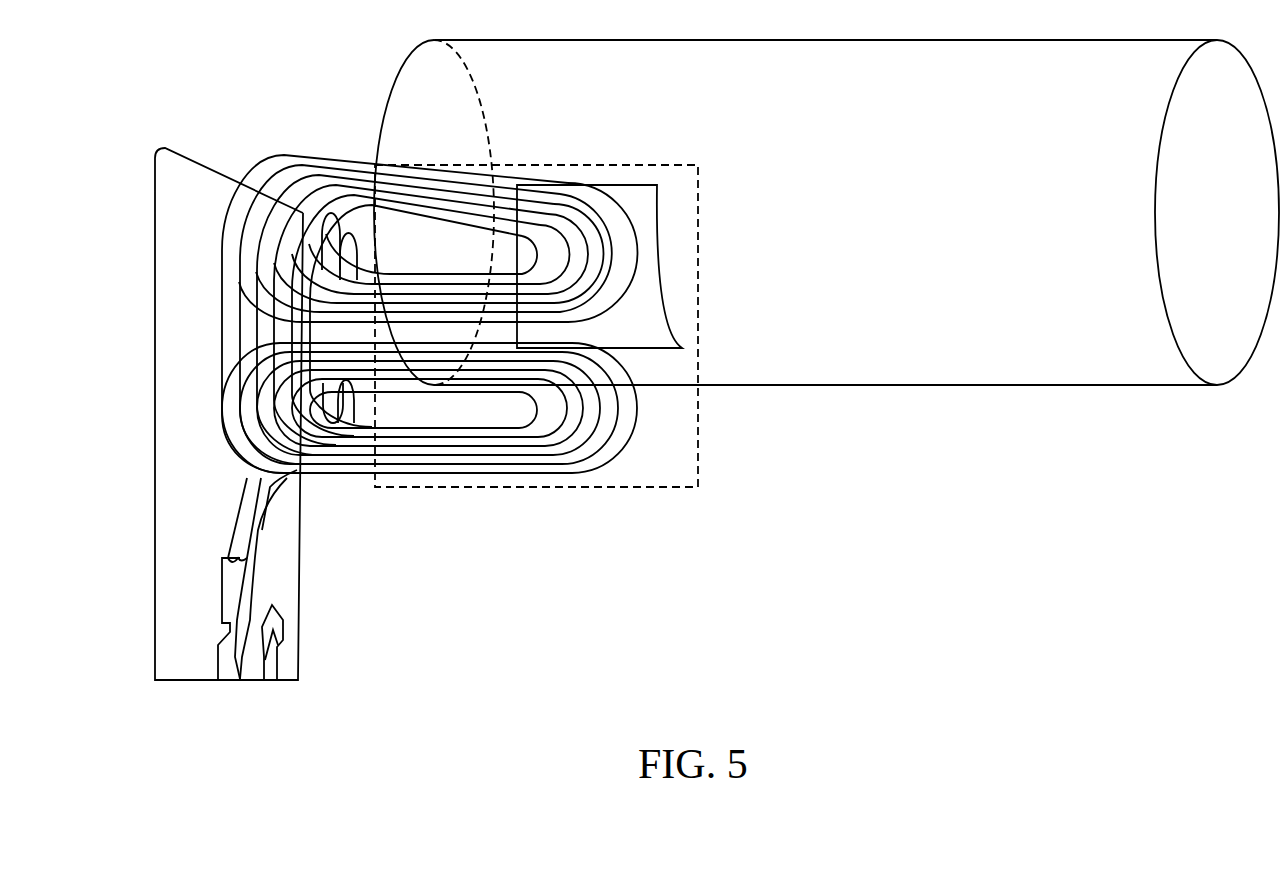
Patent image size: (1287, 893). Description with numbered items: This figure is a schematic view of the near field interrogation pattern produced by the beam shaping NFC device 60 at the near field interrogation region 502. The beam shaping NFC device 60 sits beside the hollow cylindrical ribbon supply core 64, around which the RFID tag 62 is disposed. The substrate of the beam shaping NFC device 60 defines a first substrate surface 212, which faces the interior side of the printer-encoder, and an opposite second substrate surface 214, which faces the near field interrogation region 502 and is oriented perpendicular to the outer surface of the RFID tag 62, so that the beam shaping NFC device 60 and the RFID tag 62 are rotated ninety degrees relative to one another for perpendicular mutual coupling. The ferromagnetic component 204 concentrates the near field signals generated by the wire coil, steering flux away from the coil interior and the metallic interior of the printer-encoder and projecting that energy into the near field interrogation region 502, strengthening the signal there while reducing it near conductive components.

The ribbon supply core 64 is at (990, 48).
The beam shaping NFC device 60 is at (208, 175).
The RFID tag 62 is at (597, 182).
The ferromagnetic component 204 is at (228, 331).
The first substrate surface 212 is at (155, 418).
The second substrate surface 214 is at (240, 503).
The near field interrogation region 502 is at (702, 431).